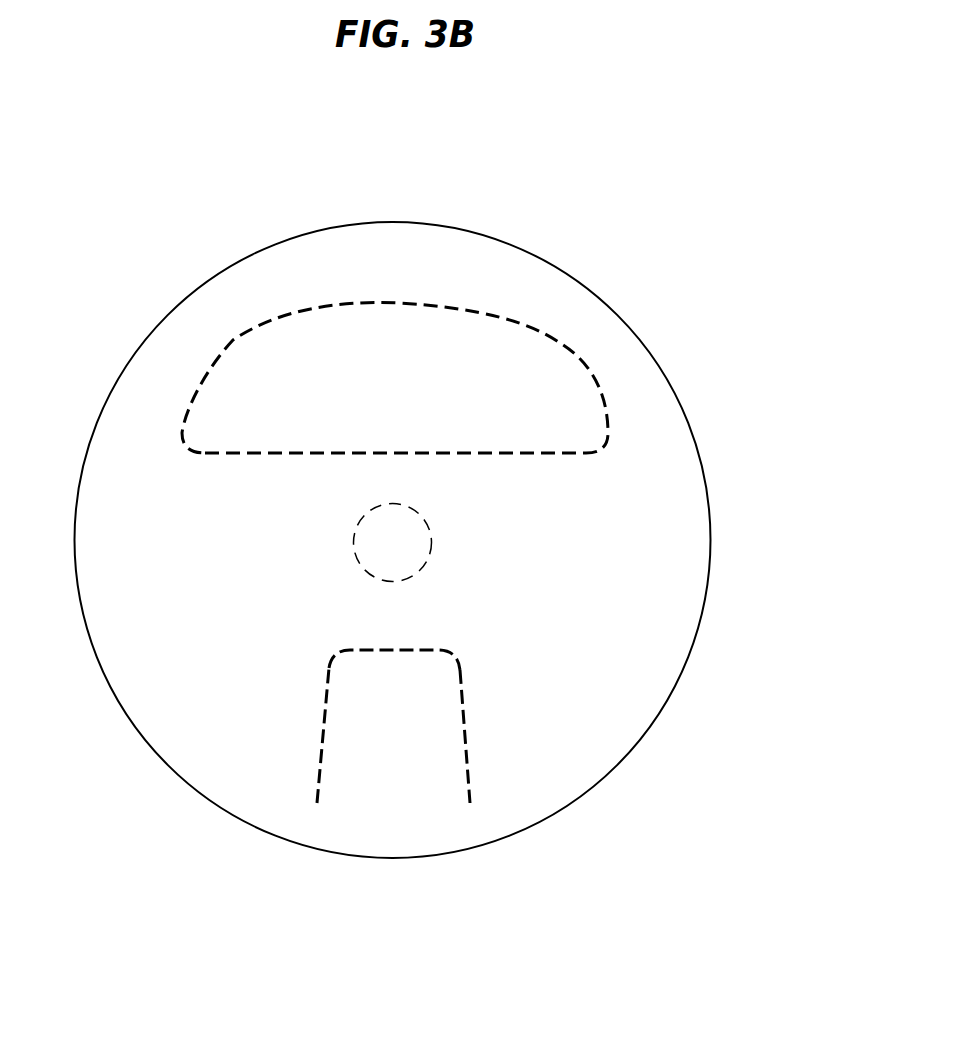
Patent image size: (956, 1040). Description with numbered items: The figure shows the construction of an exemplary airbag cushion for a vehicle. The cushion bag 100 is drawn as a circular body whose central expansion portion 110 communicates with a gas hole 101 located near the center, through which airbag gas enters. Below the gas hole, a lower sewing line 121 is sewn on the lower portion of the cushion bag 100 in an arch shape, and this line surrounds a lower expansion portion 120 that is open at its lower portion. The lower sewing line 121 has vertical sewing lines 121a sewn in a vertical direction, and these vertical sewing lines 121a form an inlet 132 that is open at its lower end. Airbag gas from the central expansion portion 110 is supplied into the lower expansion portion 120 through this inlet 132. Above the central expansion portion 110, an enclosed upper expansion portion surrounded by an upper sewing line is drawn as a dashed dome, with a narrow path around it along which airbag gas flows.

The cushion bag 100 is at (447, 205).
The gas hole 101 is at (405, 550).
The central expansion portion 110 is at (290, 565).
The lower expansion portion 120 is at (451, 739).
The lower sewing line 121 is at (397, 648).
The vertical sewing lines 121a is at (317, 733).
The inlet 132 is at (423, 788).